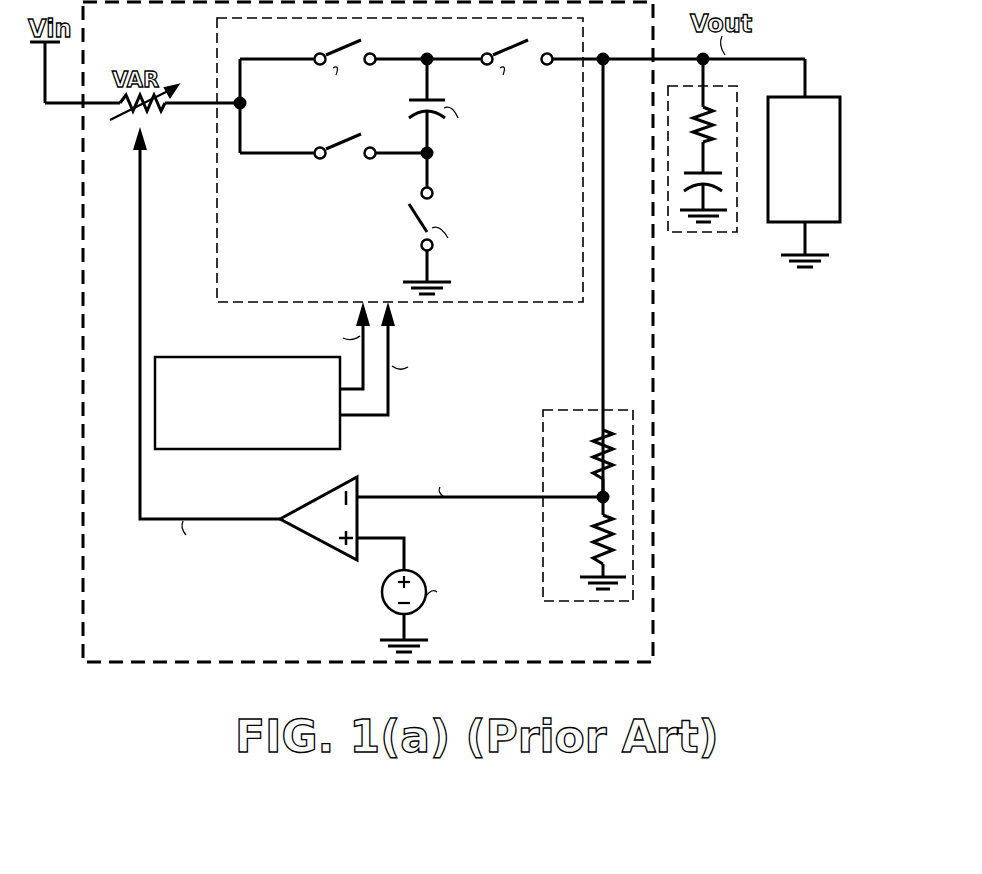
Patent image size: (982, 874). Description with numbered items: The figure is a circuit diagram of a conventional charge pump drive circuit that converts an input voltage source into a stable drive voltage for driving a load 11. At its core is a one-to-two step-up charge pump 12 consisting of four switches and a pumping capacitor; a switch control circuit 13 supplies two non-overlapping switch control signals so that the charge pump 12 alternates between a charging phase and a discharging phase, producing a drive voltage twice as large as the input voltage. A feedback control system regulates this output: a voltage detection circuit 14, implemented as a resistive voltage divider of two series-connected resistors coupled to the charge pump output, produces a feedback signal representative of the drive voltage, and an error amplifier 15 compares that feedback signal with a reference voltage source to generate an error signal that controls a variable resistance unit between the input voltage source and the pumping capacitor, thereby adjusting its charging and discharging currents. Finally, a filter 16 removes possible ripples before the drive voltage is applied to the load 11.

The load 11 is at (840, 97).
The 1:2 step-up charge pump 12 is at (490, 303).
The switch control circuit 13 is at (203, 357).
The voltage detection circuit 14 is at (542, 431).
The error amplifier 15 is at (317, 541).
The filter 16 is at (702, 233).